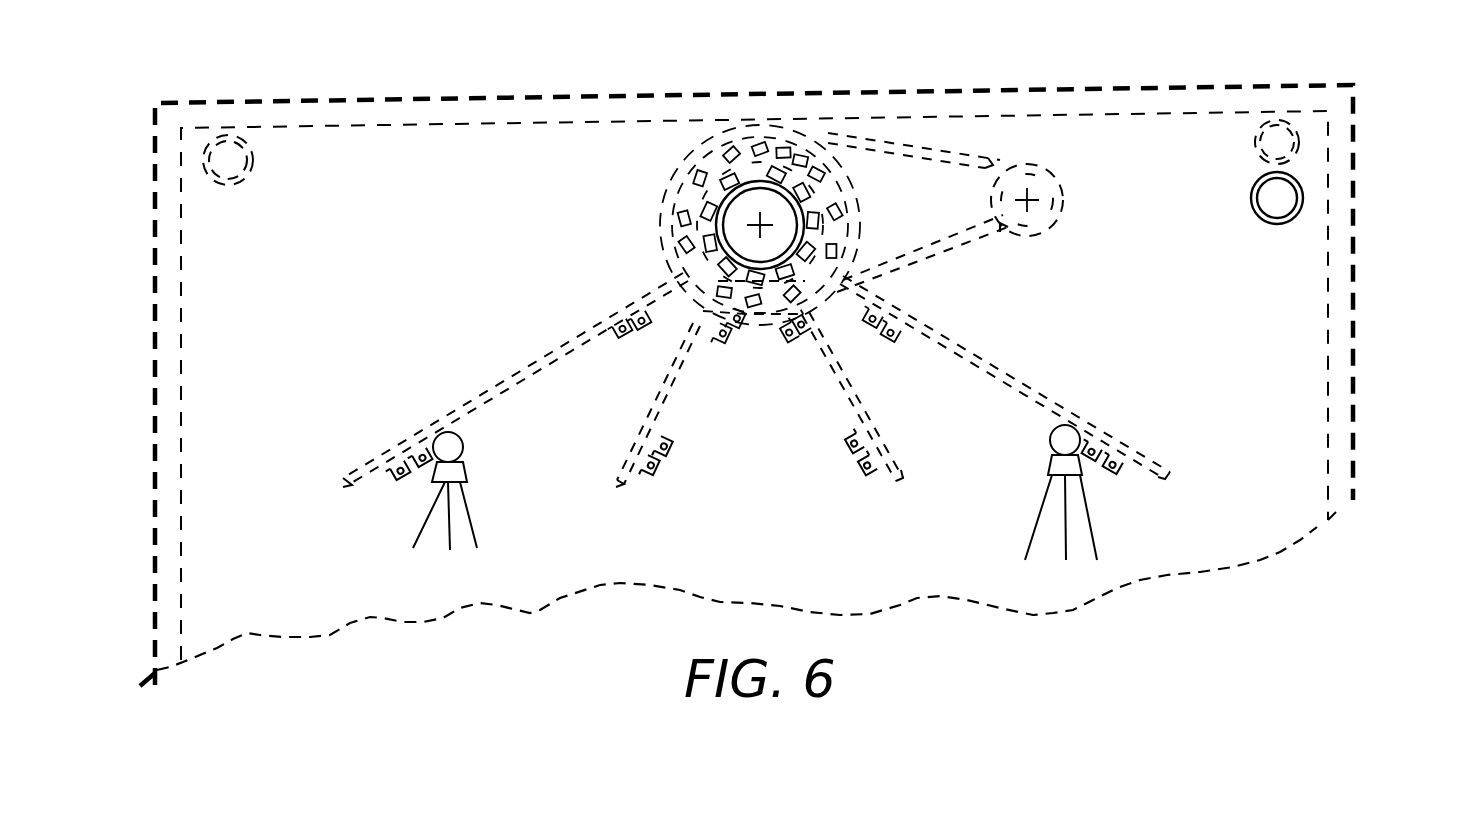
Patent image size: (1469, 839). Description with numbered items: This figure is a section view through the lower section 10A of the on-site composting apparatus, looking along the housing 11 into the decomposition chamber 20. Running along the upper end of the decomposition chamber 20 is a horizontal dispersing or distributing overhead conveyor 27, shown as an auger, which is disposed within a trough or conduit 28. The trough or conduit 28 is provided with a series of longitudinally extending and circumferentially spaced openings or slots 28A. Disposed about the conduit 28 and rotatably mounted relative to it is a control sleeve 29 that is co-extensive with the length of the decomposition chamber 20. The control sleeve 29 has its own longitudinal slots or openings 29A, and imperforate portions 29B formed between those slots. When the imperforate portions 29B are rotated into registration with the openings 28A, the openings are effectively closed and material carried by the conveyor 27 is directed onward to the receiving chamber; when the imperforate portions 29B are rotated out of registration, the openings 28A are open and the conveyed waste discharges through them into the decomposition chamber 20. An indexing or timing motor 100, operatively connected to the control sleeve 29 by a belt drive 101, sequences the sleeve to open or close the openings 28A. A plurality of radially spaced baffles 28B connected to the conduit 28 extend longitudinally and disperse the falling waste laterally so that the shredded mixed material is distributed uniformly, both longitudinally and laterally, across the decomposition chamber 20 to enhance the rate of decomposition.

The lower section 10A is at (1360, 293).
The housing 11 is at (1353, 363).
The decomposition chamber 20 is at (1283, 415).
The horizontal distributing conveyor 27 is at (825, 182).
The trough or conduit 28 is at (830, 211).
The openings or slots 28A is at (760, 280).
The baffles 28B is at (547, 360).
The control sleeve 29 is at (793, 149).
The slots or openings 29A is at (763, 150).
The imperforate portions 29B is at (734, 152).
The indexing or timing motor 100 is at (1036, 184).
The belt drive 101 is at (997, 158).